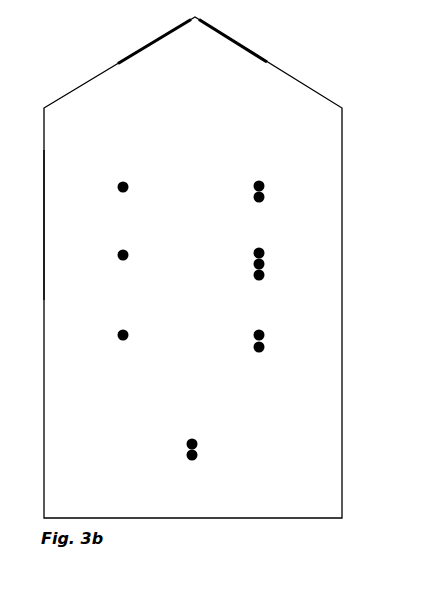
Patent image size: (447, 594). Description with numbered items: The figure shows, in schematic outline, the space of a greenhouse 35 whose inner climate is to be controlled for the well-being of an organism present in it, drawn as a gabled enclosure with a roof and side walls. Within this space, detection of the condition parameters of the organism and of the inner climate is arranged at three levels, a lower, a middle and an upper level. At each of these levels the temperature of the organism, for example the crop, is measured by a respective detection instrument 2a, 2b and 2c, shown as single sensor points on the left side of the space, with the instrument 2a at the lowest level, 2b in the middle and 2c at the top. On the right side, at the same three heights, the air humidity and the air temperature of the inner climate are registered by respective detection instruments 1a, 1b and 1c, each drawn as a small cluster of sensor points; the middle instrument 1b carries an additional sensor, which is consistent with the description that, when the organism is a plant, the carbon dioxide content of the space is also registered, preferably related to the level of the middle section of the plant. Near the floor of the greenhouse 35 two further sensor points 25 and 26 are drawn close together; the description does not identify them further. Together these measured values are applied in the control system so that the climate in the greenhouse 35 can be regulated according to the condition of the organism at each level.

The detection instrument 1a is at (254, 335).
The detection instrument 1b is at (254, 253).
The detection instrument 1c is at (254, 186).
The detection instrument 2a is at (118, 334).
The detection instrument 2b is at (118, 254).
The detection instrument 2c is at (118, 186).
The transmitter 25 is at (187, 443).
The receiver 26 is at (187, 455).
The greenhouse 35 is at (44, 213).